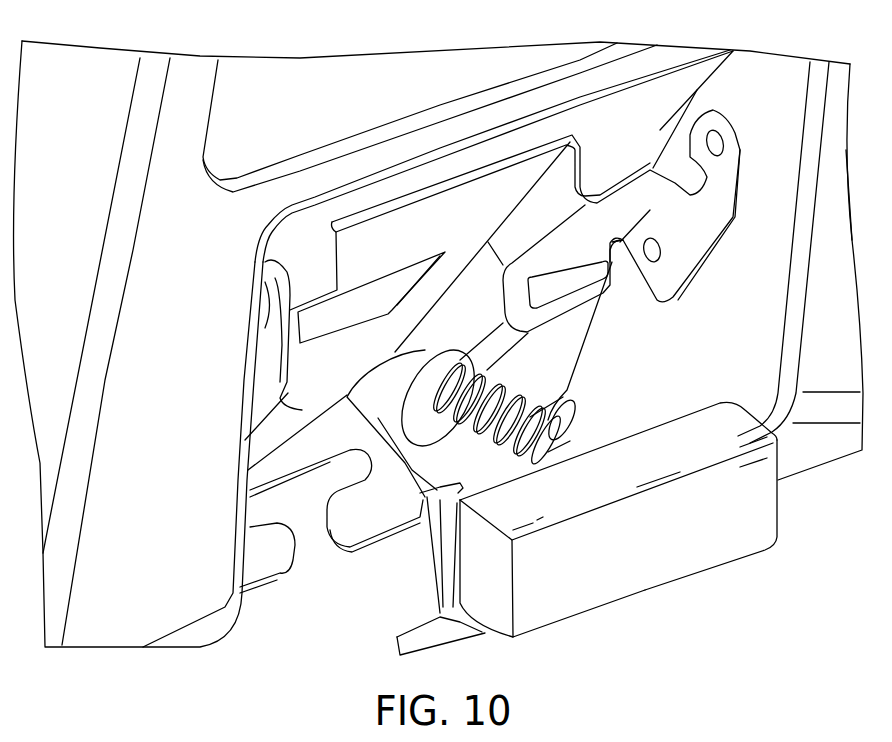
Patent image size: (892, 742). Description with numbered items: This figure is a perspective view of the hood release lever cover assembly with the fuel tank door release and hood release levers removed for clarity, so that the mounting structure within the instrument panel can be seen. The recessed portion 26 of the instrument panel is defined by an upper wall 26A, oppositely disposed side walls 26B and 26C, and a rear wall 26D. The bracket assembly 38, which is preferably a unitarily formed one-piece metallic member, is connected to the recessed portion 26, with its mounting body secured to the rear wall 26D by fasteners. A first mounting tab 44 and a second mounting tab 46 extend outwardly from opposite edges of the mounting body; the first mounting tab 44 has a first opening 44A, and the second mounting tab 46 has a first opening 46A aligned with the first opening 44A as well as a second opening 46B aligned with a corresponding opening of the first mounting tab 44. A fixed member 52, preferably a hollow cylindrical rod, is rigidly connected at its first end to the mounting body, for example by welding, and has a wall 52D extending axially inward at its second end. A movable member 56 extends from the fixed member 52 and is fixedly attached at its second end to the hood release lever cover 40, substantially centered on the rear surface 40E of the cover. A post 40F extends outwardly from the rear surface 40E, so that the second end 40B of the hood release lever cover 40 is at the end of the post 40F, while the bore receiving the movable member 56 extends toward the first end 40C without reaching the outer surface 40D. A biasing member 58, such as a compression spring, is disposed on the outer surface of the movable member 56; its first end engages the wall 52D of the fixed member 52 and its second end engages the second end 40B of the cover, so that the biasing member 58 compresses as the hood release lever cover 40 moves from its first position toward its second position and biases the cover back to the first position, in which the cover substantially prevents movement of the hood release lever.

The recessed portion 26 is at (438, 326).
The upper wall 26A is at (380, 178).
The side wall 26B is at (253, 397).
The side wall 26C is at (768, 105).
The rear wall 26D is at (640, 118).
The bracket assembly 38 is at (277, 580).
The hood release lever cover 40 is at (658, 458).
The second end of the hood release lever cover 40B is at (567, 393).
The first end of the hood release lever cover 40C is at (590, 573).
The outer surface 40D is at (710, 537).
The rear surface 40E is at (683, 413).
The post 40F is at (565, 420).
The first mounting tab 44 is at (243, 327).
The first opening of the first mounting tab 44A is at (270, 257).
The second mounting tab 46 is at (698, 227).
The first opening of the second mounting tab 46A is at (725, 143).
The second opening of the second mounting tab 46B is at (663, 257).
The fixed member 52 is at (483, 351).
The wall 52D is at (460, 347).
The movable member 56 is at (487, 393).
The biasing member 58 is at (425, 493).